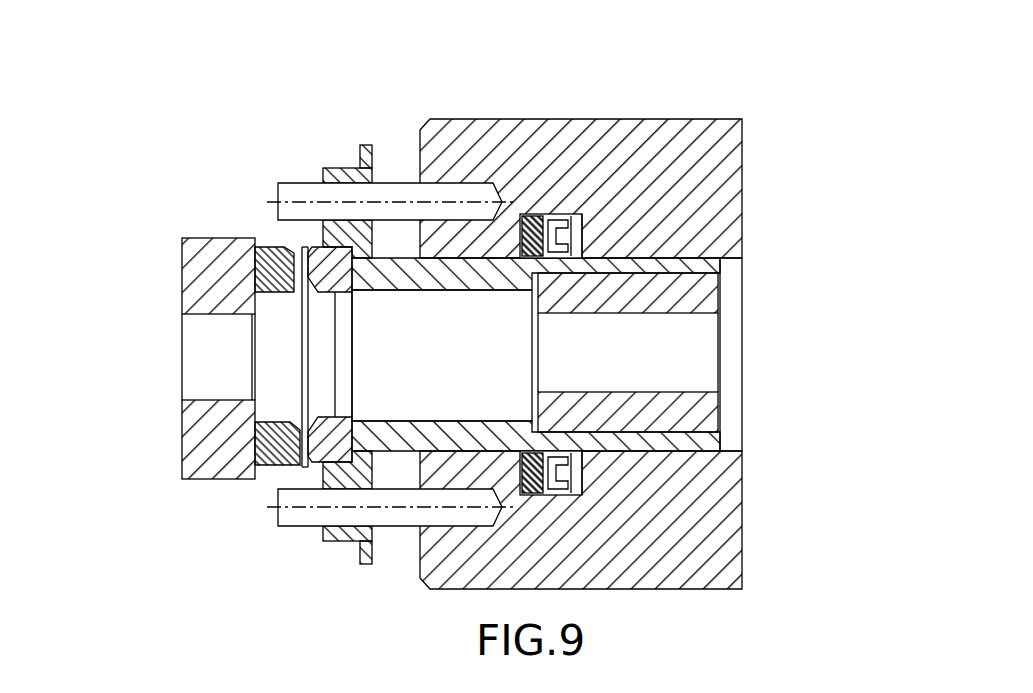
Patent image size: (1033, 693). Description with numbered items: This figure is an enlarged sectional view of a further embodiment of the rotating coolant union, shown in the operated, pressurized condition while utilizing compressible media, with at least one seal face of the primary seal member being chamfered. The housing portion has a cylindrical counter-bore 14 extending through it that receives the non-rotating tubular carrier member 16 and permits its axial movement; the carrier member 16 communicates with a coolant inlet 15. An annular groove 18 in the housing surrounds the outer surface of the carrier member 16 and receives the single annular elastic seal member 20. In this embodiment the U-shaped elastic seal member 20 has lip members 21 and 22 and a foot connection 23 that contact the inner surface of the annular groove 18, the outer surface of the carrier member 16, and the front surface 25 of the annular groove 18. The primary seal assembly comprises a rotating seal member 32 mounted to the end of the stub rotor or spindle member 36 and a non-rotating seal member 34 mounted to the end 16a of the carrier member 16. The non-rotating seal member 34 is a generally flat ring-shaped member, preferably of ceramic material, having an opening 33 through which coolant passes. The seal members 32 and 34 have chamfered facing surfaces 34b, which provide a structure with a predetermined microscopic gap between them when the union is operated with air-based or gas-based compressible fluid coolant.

The cylindrical counter-bore 14 is at (721, 257).
The coolant inlet 15 is at (720, 350).
The tubular carrier member 16 is at (703, 432).
The end of carrier member 16a is at (307, 247).
The annular groove 18 is at (582, 216).
The annular elastic seal member 20 is at (550, 215).
The lip member 21 is at (567, 215).
The lip member 22 is at (585, 236).
The foot connection 23 is at (535, 215).
The front surface of the annular groove 25 is at (517, 240).
The rotating seal member 32 is at (272, 260).
The opening 33 is at (325, 357).
The non-rotating seal member 34 is at (310, 467).
The chamfered facing surfaces 34b is at (308, 247).
The stub rotor or spindle member 36 is at (213, 238).